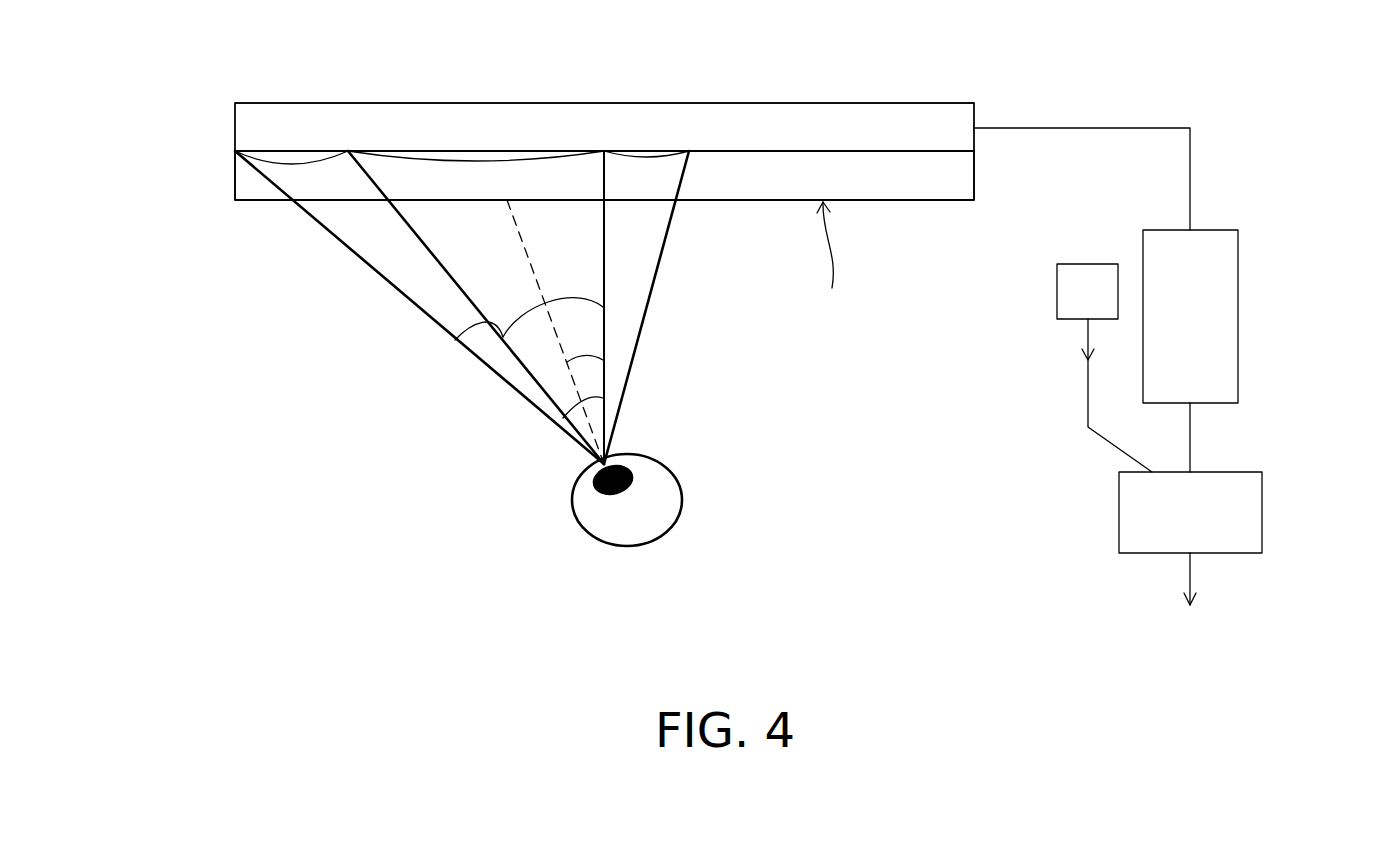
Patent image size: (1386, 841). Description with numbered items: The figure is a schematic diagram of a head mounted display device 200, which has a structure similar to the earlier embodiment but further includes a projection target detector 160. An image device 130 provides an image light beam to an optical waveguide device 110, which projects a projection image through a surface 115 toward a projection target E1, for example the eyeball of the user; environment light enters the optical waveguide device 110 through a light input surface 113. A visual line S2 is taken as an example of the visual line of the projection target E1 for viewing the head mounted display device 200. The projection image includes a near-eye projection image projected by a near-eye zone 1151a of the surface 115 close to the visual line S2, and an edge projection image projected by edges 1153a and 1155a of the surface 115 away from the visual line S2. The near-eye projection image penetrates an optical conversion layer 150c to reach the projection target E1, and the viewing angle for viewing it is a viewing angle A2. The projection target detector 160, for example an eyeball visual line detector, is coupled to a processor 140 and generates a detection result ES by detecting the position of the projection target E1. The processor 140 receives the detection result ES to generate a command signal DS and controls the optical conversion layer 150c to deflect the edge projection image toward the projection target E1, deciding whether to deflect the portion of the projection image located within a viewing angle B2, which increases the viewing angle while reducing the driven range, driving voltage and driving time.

The optical waveguide device 110 is at (235, 122).
The light input surface 113 is at (882, 102).
The surface 115 is at (943, 152).
The optical conversion layer 150c is at (880, 170).
The near-eye zone 1151a is at (477, 163).
The edge 1153a is at (297, 163).
The edge 1155a is at (647, 158).
The image device 130 is at (1238, 297).
The processor 140 is at (1262, 513).
The projection target detector 160 is at (1065, 319).
The head mounted display device 200 is at (1338, 657).
The viewing angle A2 is at (453, 340).
The viewing angle B2 is at (563, 418).
The visual line S2 is at (603, 360).
The projection target E1 is at (676, 503).
The command signal DS is at (1005, 428).
The detection result ES is at (1117, 395).